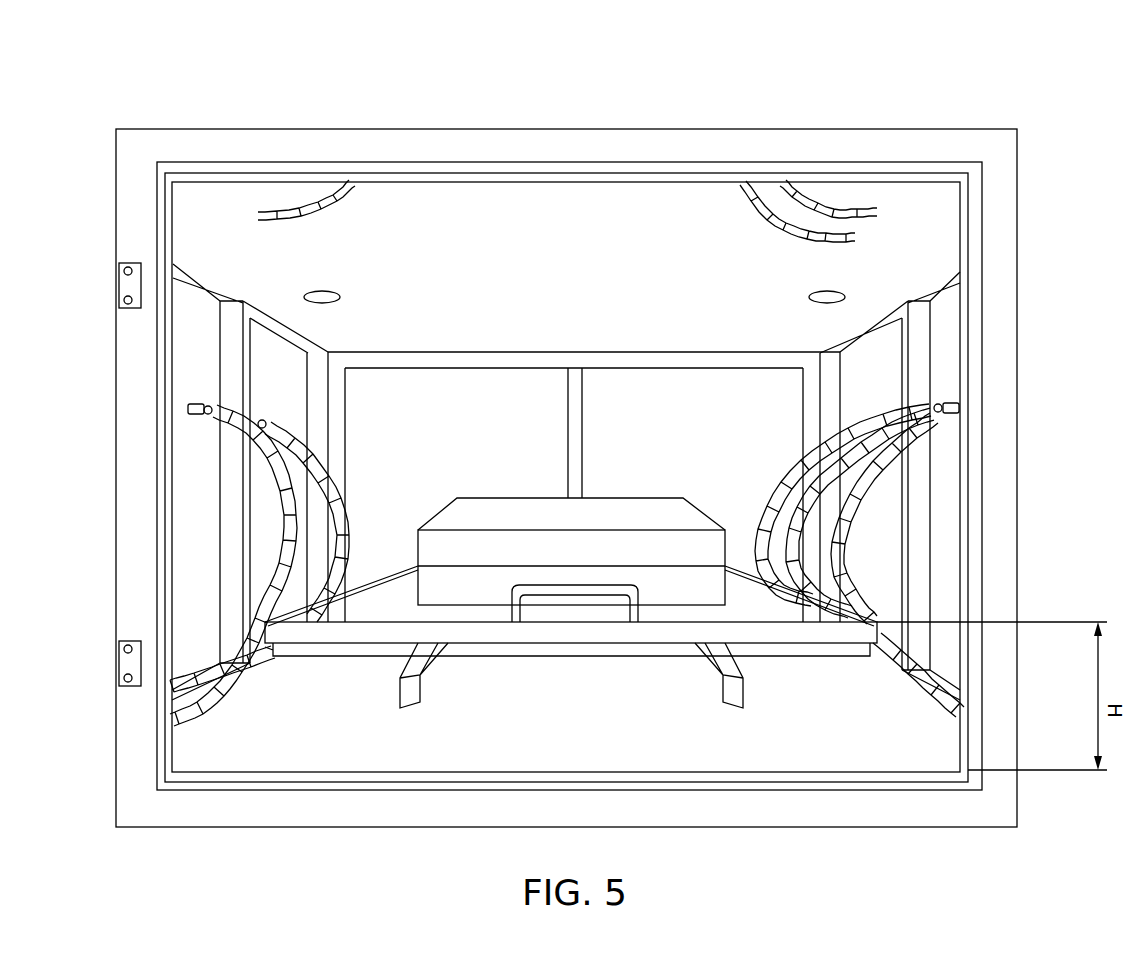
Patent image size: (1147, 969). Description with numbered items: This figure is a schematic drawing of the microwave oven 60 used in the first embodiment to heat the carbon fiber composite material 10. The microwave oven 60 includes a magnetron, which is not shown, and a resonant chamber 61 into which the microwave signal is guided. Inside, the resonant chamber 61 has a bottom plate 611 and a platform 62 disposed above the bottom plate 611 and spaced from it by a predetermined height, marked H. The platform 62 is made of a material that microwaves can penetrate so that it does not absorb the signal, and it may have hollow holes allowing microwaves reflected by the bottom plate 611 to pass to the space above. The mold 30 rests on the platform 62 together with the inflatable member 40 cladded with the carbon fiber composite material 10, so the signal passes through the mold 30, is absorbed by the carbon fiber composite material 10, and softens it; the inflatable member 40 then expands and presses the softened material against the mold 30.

The microwave oven 60 is at (958, 122).
The resonant chamber 61 is at (946, 594).
The bottom plate 611 is at (605, 705).
The platform 62 is at (383, 603).
The mold 30 is at (564, 334).
The carbon fiber composite material 10 is at (571, 486).
The inflatable member 40 is at (515, 518).